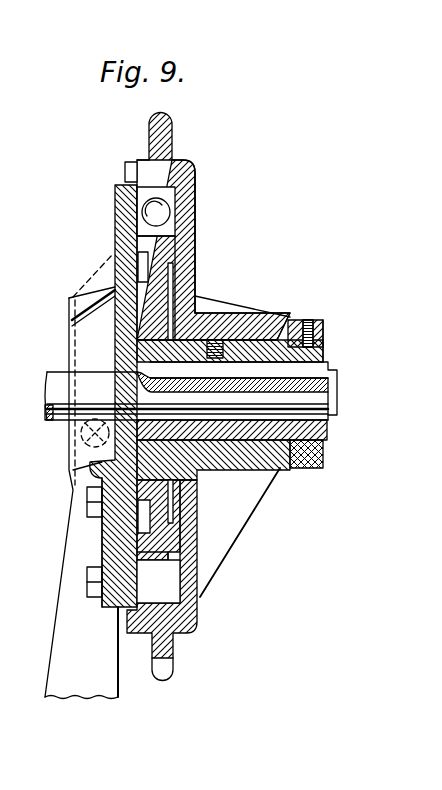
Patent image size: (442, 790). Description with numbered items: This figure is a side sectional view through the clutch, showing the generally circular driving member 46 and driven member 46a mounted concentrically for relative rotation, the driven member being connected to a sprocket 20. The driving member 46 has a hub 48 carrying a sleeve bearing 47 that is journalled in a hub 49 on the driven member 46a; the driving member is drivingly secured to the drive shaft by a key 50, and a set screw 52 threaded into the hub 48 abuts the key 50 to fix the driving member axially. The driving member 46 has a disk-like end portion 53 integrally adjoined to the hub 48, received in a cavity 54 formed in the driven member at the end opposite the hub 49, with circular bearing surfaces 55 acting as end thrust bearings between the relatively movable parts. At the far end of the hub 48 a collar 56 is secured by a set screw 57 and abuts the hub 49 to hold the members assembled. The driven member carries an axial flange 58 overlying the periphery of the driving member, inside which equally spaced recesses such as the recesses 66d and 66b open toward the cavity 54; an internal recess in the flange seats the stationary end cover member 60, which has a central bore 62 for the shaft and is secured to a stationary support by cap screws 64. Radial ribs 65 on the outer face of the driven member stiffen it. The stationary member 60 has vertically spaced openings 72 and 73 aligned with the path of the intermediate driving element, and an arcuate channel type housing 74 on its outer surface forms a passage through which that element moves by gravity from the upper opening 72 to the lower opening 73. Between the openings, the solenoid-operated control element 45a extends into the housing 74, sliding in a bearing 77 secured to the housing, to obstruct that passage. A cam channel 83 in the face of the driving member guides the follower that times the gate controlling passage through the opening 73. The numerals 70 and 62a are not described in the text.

The sprocket 20 is at (171, 141).
The housing cover 70 is at (192, 183).
The axial flange 58 is at (127, 163).
The recess 66d is at (137, 201).
The stationary end cover member 60 is at (116, 217).
The driven member 46a is at (193, 219).
The driving member 46 is at (186, 250).
The cavity 54 is at (180, 268).
The disk-like end portion 53 is at (178, 290).
The opening 72 is at (113, 268).
The channel type housing 74 is at (69, 302).
The set screw 52 is at (250, 338).
The radial ribs 65 is at (212, 310).
The sleeve bearing 47 is at (296, 320).
The set screw 57 is at (310, 322).
The collar 56 is at (325, 335).
The key 50 is at (320, 368).
The central bore 62 is at (123, 365).
The shaft end 62a is at (60, 380).
The hub 48 is at (324, 430).
The hub 49 is at (282, 470).
The bearing 77 is at (80, 430).
The control element 45a is at (86, 447).
The cap screws 64 is at (86, 504).
The opening 73 is at (112, 540).
The cam channel 83 is at (175, 520).
The circular bearing surfaces 55 is at (160, 534).
The recess 66b is at (168, 592).